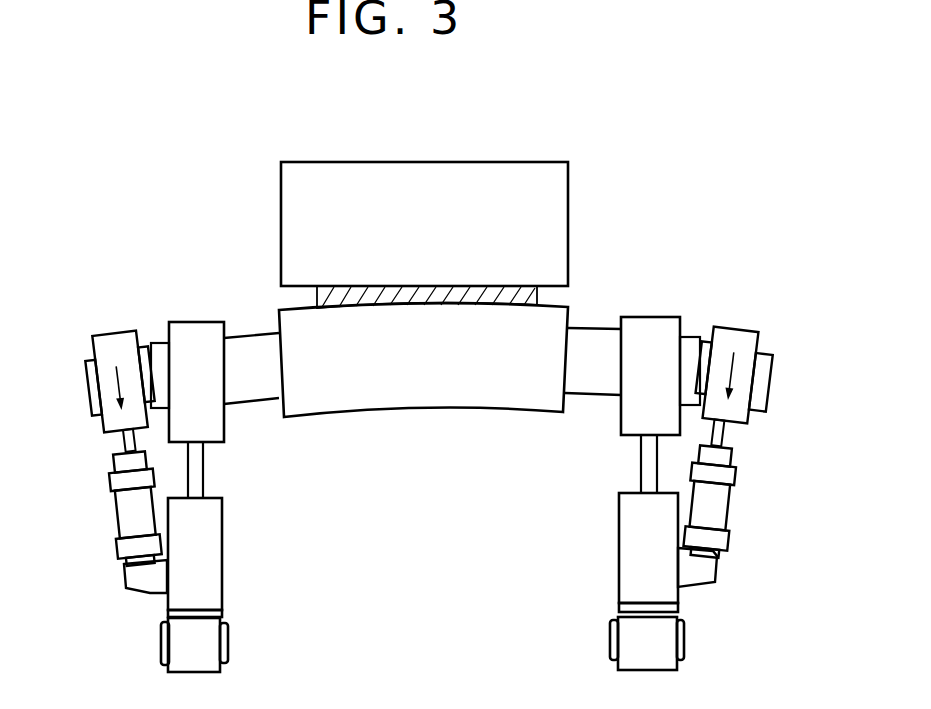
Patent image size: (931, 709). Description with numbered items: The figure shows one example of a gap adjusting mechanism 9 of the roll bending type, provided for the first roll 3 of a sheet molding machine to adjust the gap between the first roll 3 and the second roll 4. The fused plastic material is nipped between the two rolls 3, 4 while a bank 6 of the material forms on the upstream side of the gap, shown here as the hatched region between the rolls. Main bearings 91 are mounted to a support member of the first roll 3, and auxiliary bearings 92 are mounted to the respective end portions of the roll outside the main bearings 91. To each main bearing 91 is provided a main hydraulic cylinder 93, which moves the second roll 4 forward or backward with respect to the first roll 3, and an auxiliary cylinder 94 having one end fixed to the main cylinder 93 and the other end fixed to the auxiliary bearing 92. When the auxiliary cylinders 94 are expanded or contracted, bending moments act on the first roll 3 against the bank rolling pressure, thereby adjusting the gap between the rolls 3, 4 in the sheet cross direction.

The first roll 3 is at (474, 409).
The second roll 4 is at (560, 153).
The bank 6 is at (540, 295).
The gap adjusting mechanism 9 is at (812, 328).
The main bearings 91 is at (185, 322).
The auxiliary bearings 92 is at (110, 340).
The main hydraulic cylinder 93 is at (212, 517).
The auxiliary cylinder 94 is at (128, 518).